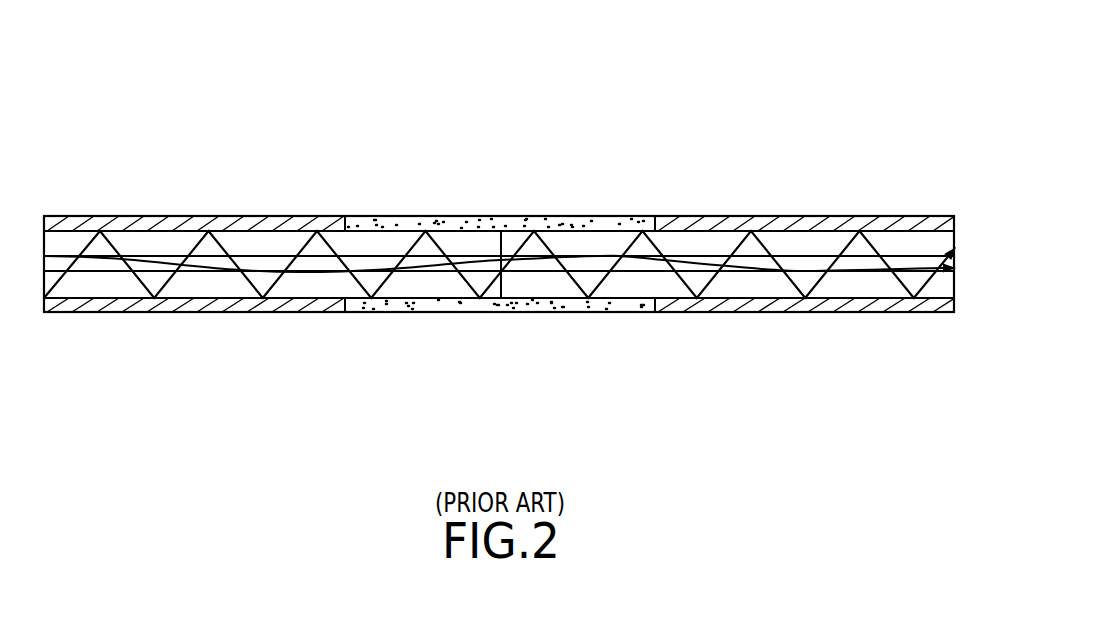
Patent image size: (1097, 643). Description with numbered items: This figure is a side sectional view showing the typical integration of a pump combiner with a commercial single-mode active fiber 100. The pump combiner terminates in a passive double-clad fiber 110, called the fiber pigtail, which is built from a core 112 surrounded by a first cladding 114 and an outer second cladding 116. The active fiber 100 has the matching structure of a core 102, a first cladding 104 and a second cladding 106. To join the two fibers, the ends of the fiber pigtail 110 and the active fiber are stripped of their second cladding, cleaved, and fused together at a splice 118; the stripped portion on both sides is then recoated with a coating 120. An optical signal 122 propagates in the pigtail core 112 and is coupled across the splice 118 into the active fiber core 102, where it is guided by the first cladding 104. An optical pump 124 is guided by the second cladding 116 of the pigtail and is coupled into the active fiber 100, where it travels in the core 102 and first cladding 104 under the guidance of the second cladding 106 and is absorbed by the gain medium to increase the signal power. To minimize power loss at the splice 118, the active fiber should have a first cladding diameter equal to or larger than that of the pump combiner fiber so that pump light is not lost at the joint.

The active fiber 100 is at (772, 132).
The core 102 is at (827, 252).
The first cladding 104 is at (701, 295).
The second cladding 106 is at (821, 326).
The passive double-clad fiber 110 is at (236, 126).
The core 112 is at (223, 253).
The first cladding 114 is at (201, 302).
The second cladding 116 is at (313, 331).
The splice 118 is at (513, 231).
The coating 120 is at (595, 212).
The optical signal 122 is at (538, 275).
The optical pump 124 is at (495, 301).